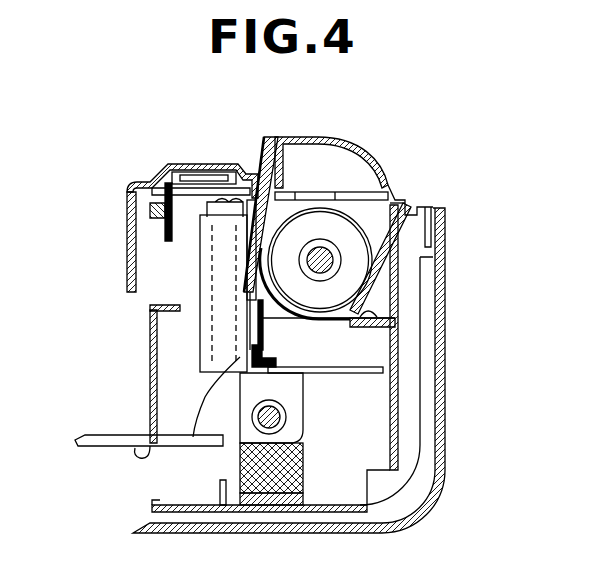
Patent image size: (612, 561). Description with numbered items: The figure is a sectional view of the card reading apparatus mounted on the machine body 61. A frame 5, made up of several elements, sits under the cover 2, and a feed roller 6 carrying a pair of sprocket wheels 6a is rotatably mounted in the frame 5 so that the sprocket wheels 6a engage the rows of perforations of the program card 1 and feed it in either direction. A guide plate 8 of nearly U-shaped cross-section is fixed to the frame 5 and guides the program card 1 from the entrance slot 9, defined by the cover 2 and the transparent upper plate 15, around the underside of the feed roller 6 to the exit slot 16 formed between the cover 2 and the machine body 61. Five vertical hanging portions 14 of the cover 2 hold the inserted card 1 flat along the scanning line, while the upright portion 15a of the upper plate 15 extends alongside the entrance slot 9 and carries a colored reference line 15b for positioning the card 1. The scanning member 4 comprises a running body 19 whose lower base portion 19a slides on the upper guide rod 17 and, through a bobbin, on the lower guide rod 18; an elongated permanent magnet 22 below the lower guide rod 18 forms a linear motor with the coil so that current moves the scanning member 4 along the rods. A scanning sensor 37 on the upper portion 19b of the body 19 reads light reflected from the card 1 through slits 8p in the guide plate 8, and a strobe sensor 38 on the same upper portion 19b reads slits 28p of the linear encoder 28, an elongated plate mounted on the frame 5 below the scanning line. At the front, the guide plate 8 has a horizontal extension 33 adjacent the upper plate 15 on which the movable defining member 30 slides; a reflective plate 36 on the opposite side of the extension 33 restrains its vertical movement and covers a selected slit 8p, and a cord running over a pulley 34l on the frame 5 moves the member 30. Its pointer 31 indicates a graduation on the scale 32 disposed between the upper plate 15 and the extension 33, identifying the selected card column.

The program card 1 is at (270, 137).
The cover 2 is at (366, 160).
The scanning member 4 is at (188, 318).
The frame 5 is at (400, 305).
The feed roller 6 is at (340, 262).
The sprocket wheel 6a is at (398, 200).
The guide plate 8 is at (368, 290).
The slit 8p is at (150, 310).
The entrance slot 9 is at (264, 140).
The vertical hanging portion 14 is at (293, 192).
The upper plate 15 is at (180, 164).
The upright portion 15a is at (258, 165).
The colored reference line 15b is at (247, 172).
The exit slot 16 is at (335, 215).
The upper guide rod 17 is at (195, 312).
The lower guide rod 18 is at (278, 418).
The running body 19 is at (215, 362).
The lower base portion 19a is at (290, 390).
The upper portion 19b is at (235, 240).
The permanent magnet 22 is at (303, 472).
The linear encoder 28 is at (400, 350).
The slit 28p is at (425, 370).
The movable defining member 30 is at (150, 178).
The pointer 31 is at (160, 194).
The scale 32 is at (195, 185).
The extension 33 is at (195, 228).
The pulley 34l is at (152, 210).
The reflective plate 36 is at (225, 255).
The scanning sensor 37 is at (205, 275).
The strobe sensor 38 is at (205, 442).
The machine body 61 is at (437, 495).